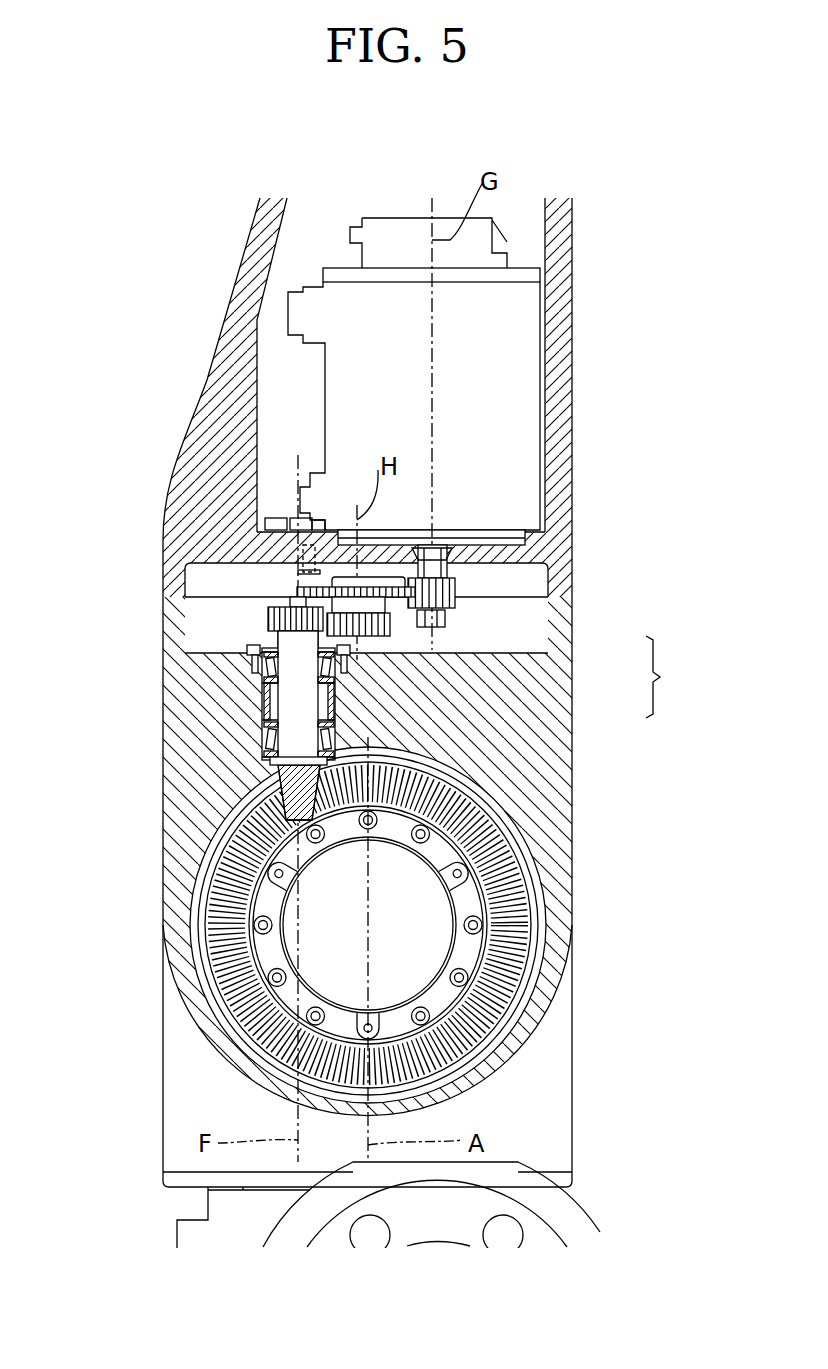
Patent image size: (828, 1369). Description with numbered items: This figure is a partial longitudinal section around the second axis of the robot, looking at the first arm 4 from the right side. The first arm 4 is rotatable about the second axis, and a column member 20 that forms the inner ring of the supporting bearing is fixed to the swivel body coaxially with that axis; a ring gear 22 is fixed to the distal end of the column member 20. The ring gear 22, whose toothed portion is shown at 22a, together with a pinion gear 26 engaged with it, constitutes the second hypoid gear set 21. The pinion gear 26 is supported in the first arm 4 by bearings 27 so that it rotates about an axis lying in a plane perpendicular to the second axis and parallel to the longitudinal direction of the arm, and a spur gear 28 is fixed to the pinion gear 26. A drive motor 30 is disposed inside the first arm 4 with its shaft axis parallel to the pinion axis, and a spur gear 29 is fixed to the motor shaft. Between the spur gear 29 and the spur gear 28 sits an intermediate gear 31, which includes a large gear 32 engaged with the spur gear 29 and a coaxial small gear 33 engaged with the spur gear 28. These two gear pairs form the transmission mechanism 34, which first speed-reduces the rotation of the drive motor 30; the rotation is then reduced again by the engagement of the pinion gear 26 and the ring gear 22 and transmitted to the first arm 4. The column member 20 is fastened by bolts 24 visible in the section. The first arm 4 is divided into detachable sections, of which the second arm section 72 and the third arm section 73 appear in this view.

The first arm 4 is at (218, 334).
The second arm section 72 is at (203, 393).
The third arm section 73 is at (175, 878).
The drive motor 30 is at (540, 328).
The transmission mechanism 34 is at (210, 583).
The spur gear 29 is at (458, 583).
The intermediate gear 31 is at (674, 677).
The large gear 32 is at (403, 608).
The small gear 33 is at (383, 637).
The spur gear 28 is at (270, 617).
The bearings 27 is at (263, 670).
The pinion gear 26 is at (277, 790).
The ring gear 22 is at (235, 975).
The worm wheel teeth 22a is at (418, 868).
The second hypoid gear set 21 is at (323, 815).
The column member 20 is at (492, 903).
The bolts 24 is at (440, 960).